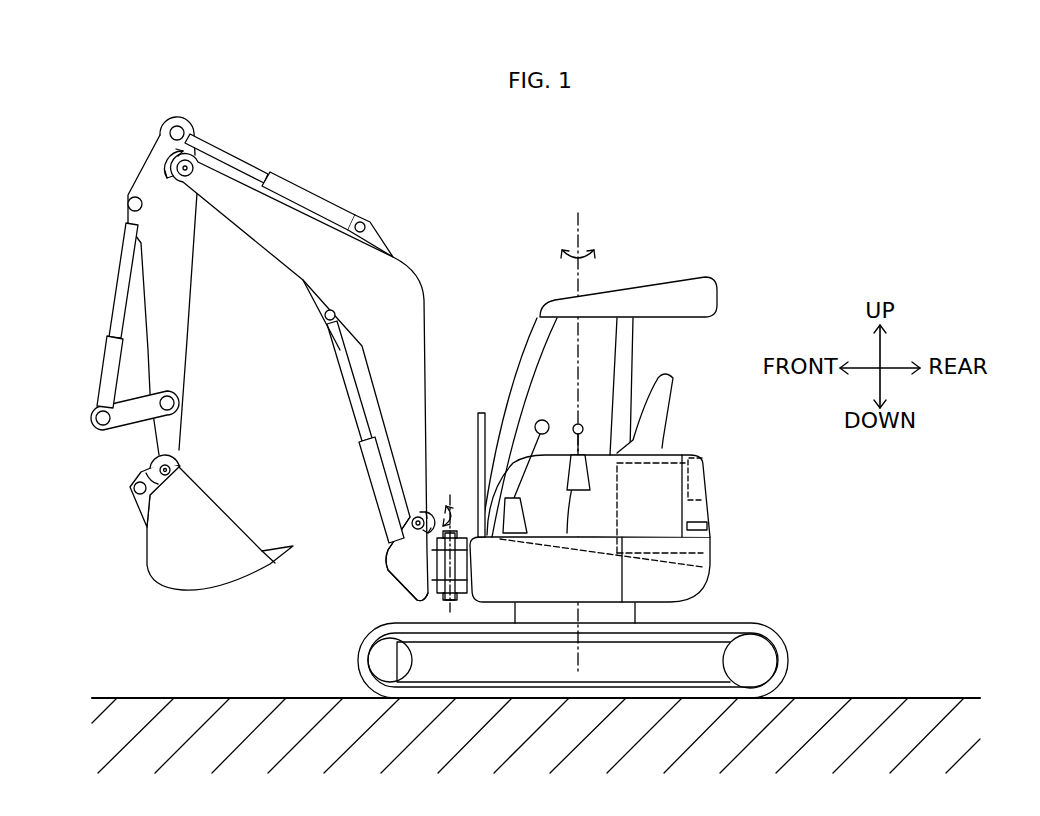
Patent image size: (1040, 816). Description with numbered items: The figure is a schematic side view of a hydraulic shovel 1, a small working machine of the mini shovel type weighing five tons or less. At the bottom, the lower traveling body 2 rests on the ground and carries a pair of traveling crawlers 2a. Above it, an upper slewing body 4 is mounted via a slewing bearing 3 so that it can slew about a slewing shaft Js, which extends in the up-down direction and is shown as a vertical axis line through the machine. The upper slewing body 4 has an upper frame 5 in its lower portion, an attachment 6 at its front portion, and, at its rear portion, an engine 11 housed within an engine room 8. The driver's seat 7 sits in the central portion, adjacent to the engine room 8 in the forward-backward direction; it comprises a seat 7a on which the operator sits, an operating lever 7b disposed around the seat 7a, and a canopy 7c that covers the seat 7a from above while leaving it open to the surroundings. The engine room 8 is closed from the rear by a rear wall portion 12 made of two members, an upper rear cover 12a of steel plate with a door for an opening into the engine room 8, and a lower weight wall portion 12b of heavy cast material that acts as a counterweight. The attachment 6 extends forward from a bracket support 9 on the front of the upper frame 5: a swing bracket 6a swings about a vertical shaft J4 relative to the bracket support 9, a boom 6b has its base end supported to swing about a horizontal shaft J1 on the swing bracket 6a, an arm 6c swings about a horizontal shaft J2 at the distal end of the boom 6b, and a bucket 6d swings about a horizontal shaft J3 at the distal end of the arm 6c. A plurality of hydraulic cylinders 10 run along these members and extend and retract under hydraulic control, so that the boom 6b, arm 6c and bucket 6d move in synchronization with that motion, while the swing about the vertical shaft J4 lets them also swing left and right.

The hydraulic shovel 1 is at (746, 216).
The lower traveling body 2 is at (795, 632).
The traveling crawlers 2a is at (790, 650).
The slewing bearing 3 is at (637, 612).
The upper slewing body 4 is at (501, 318).
The upper frame 5 is at (605, 586).
The attachment 6 is at (309, 181).
The swing bracket 6a is at (407, 543).
The boom 6b is at (412, 302).
The arm 6c is at (178, 302).
The bucket 6d is at (193, 500).
The driver's seat 7 is at (660, 266).
The seat 7a is at (663, 373).
The operating lever 7b is at (572, 478).
The canopy 7c is at (710, 292).
The engine room 8 is at (699, 437).
The bracket support 9 is at (463, 543).
The hydraulic cylinders 10 is at (333, 208).
The engine 11 is at (692, 475).
The rear wall portion 12 is at (806, 487).
The rear cover 12a is at (708, 488).
The weight wall portion 12b is at (703, 563).
The horizontal shaft J1 is at (418, 513).
The horizontal shaft J2 is at (195, 152).
The horizontal shaft J3 is at (180, 463).
The vertical shaft J4 is at (450, 612).
The slewing shaft Js is at (582, 232).